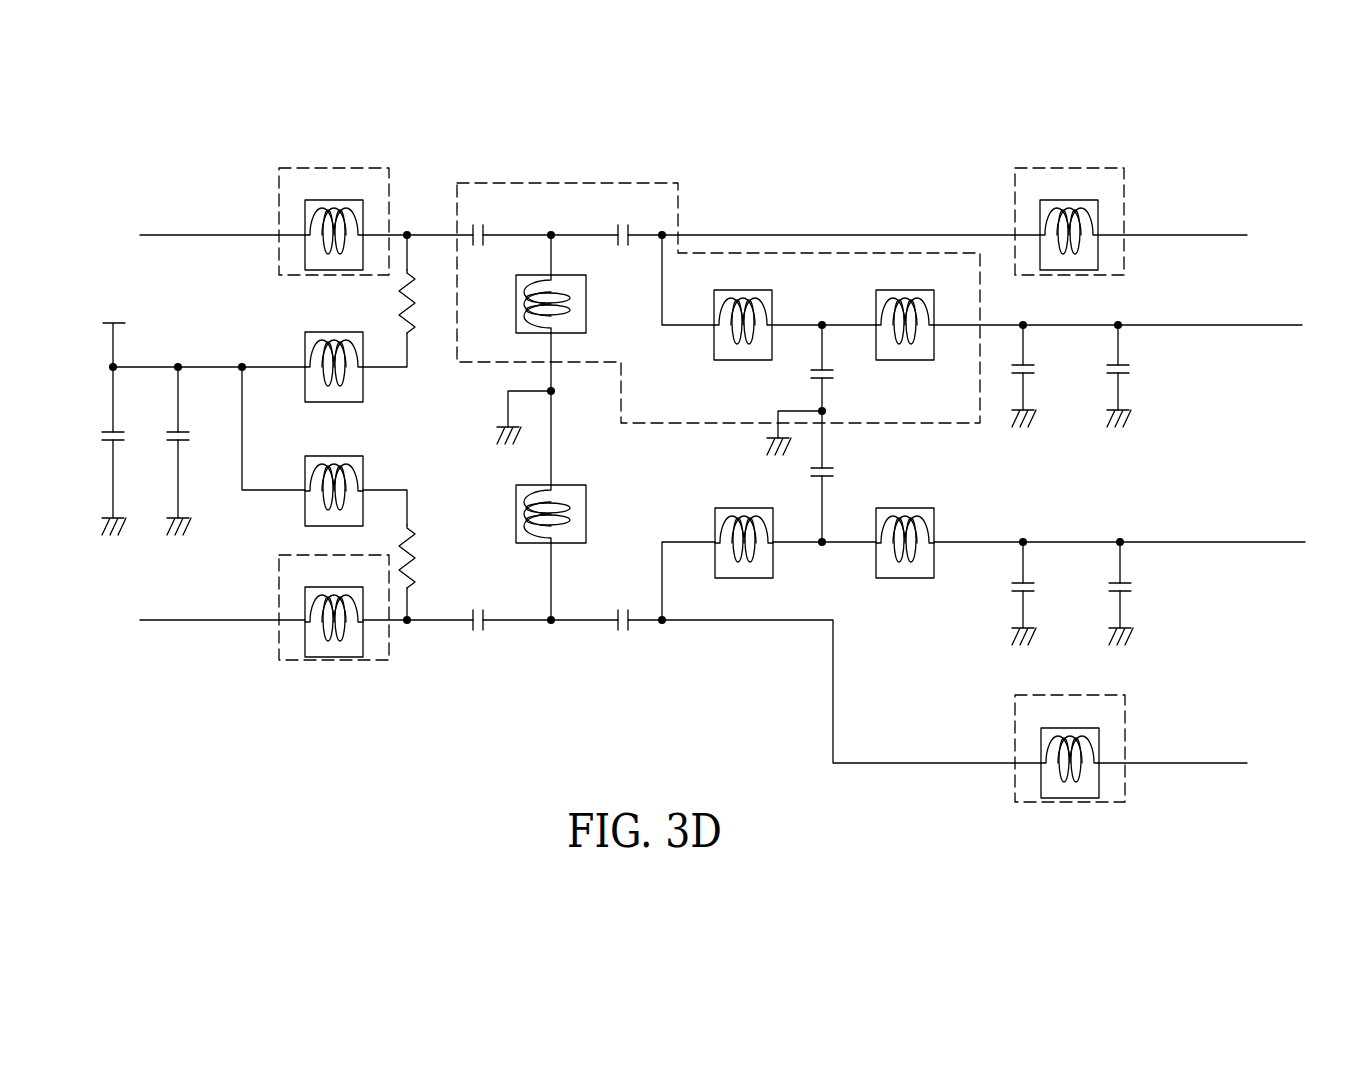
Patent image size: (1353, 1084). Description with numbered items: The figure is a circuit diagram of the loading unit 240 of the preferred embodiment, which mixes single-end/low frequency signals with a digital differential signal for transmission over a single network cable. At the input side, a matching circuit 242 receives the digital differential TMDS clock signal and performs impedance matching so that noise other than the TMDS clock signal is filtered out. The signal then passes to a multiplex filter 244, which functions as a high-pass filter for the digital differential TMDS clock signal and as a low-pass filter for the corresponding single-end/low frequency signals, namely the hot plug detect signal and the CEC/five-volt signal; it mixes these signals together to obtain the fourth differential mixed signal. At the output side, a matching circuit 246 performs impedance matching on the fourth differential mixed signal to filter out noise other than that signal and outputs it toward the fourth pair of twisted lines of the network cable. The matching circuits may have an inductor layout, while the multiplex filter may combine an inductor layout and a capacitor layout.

The loading unit 240 is at (1255, 135).
The matching circuit 242 is at (331, 168).
The multiplex filter 244 is at (568, 183).
The matching circuit 246 is at (1065, 168).